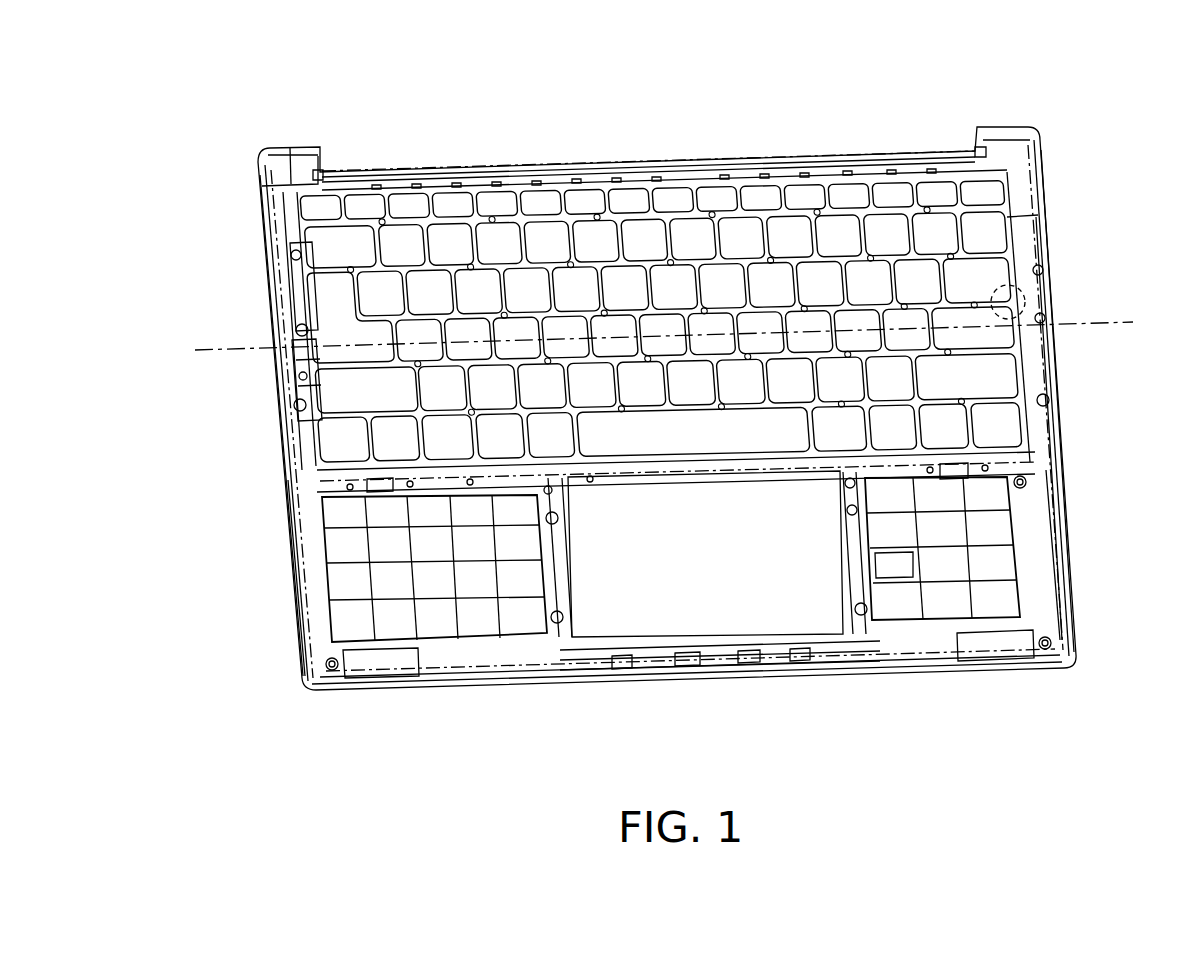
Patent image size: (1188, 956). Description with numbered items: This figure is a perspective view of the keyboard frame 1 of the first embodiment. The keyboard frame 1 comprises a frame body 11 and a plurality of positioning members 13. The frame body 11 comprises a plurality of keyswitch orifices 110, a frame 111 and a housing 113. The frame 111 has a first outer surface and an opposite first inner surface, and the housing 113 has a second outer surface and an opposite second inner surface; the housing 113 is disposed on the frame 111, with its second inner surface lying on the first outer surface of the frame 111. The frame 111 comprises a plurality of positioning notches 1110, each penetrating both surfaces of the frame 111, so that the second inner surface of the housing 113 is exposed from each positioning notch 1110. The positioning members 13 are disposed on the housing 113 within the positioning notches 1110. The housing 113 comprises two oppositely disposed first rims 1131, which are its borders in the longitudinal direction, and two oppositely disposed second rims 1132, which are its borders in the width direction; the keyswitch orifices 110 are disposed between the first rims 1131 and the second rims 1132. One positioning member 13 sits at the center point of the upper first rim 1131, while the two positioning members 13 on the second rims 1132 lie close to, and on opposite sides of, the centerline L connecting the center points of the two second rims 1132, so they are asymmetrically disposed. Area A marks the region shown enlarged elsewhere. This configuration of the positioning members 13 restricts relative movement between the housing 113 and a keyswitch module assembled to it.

The keyboard frame 1 is at (1140, 118).
The frame body 11 is at (403, 75).
The keyswitch orifices 110 is at (787, 183).
The frame 111 is at (478, 193).
The housing 113 is at (310, 157).
The first rims 1131 is at (831, 122).
The second rims 1132 is at (258, 515).
The positioning notches 1110 is at (286, 377).
The positioning members 13 is at (313, 375).
The area A is at (1020, 292).
The centerline L is at (674, 331).